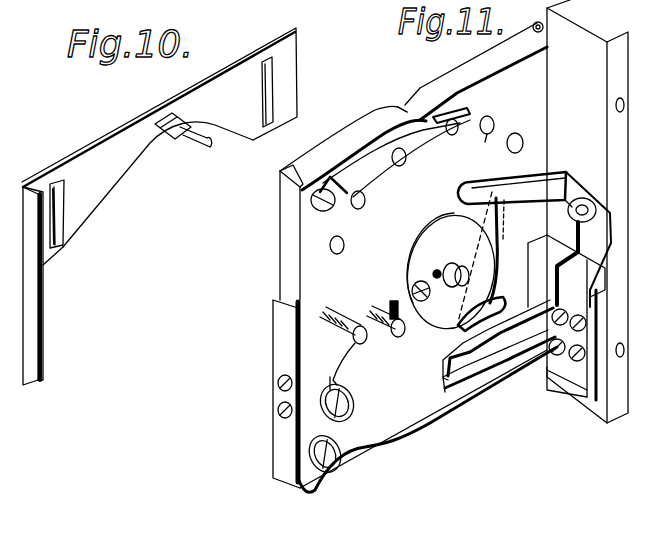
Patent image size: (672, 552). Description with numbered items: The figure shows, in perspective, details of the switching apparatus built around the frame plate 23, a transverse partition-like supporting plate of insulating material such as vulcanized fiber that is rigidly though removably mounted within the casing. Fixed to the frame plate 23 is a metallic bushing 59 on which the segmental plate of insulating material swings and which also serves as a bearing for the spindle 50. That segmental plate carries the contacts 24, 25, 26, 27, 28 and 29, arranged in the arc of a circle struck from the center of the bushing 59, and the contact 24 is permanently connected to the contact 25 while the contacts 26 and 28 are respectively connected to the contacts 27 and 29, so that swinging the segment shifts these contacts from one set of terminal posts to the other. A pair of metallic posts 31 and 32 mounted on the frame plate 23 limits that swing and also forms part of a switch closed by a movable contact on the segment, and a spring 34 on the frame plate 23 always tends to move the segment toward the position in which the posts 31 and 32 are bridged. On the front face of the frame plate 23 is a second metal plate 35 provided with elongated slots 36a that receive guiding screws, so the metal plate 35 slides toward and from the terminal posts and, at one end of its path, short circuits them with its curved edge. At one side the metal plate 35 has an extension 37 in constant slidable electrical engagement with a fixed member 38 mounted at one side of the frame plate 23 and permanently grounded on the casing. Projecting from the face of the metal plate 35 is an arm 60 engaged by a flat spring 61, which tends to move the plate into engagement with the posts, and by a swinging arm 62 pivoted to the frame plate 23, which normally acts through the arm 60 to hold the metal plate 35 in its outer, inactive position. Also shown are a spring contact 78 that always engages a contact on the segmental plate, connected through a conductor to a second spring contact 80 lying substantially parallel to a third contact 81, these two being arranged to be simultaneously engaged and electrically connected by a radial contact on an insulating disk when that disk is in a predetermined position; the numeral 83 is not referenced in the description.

In FIG. 10, the metal plate 35 is at (159, 146).
In FIG. 10, the elongated slots 36a is at (57, 228).
In FIG. 10, the extension 37 is at (33, 323).
In FIG. 10, the arm 60 is at (197, 143).
In FIG. 11, the frame plate 23 is at (303, 258).
In FIG. 11, the contact 24 is at (520, 152).
In FIG. 11, the contact 25 is at (494, 120).
In FIG. 11, the contact 26 is at (452, 135).
In FIG. 11, the contact 27 is at (405, 165).
In FIG. 11, the contact 28 is at (365, 200).
In FIG. 11, the contact 29 is at (344, 245).
In FIG. 11, the metallic post 31 is at (362, 350).
In FIG. 11, the metallic post 32 is at (398, 337).
In FIG. 11, the spring 34 is at (502, 228).
In FIG. 11, the fixed member 38 is at (285, 335).
In FIG. 11, the spindle 50 is at (446, 286).
In FIG. 11, the metallic bushing 59 is at (440, 323).
In FIG. 11, the flat spring 61 is at (476, 71).
In FIG. 11, the swinging arm 62 is at (370, 158).
In FIG. 11, the spring contact 78 is at (534, 239).
In FIG. 11, the second spring contact 80 is at (427, 411).
In FIG. 11, the third contact 81 is at (498, 340).
In FIG. 11, the screw 83 is at (410, 283).